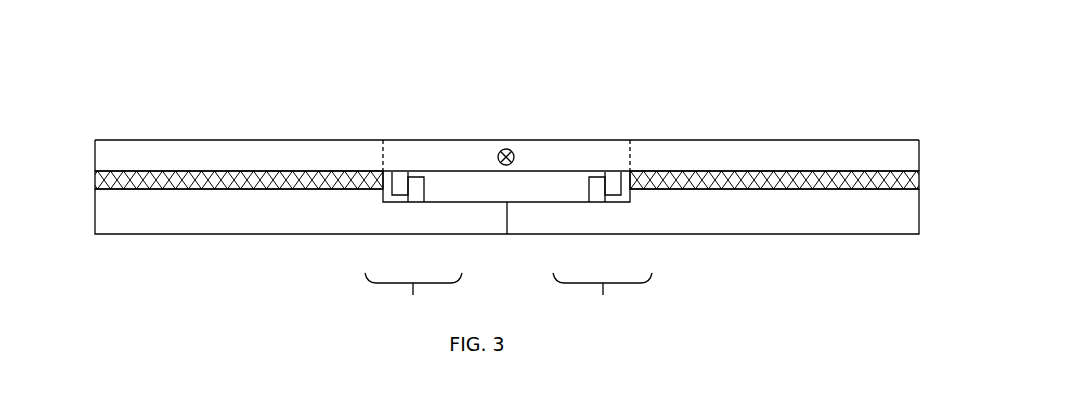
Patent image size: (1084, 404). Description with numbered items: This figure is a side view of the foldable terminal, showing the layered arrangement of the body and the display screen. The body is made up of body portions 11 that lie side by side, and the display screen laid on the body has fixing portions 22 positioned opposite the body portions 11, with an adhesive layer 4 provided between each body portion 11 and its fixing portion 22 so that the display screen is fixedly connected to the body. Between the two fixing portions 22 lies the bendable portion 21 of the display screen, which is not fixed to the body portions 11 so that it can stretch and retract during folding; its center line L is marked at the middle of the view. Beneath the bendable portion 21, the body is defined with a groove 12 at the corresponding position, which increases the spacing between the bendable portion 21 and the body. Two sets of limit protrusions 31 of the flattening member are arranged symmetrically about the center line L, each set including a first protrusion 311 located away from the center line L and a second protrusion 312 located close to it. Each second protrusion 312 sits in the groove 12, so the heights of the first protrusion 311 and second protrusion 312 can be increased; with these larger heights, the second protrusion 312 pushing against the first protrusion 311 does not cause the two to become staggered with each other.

The body portion 11 is at (253, 222).
The groove 12 is at (505, 202).
The bendable portion 21 is at (450, 153).
The fixing portion 22 is at (290, 152).
The adhesive layer 4 is at (113, 175).
The limit protrusions 31 is at (508, 298).
The first protrusion 311 is at (400, 195).
The second protrusion 312 is at (416, 197).
The center line L is at (506, 148).